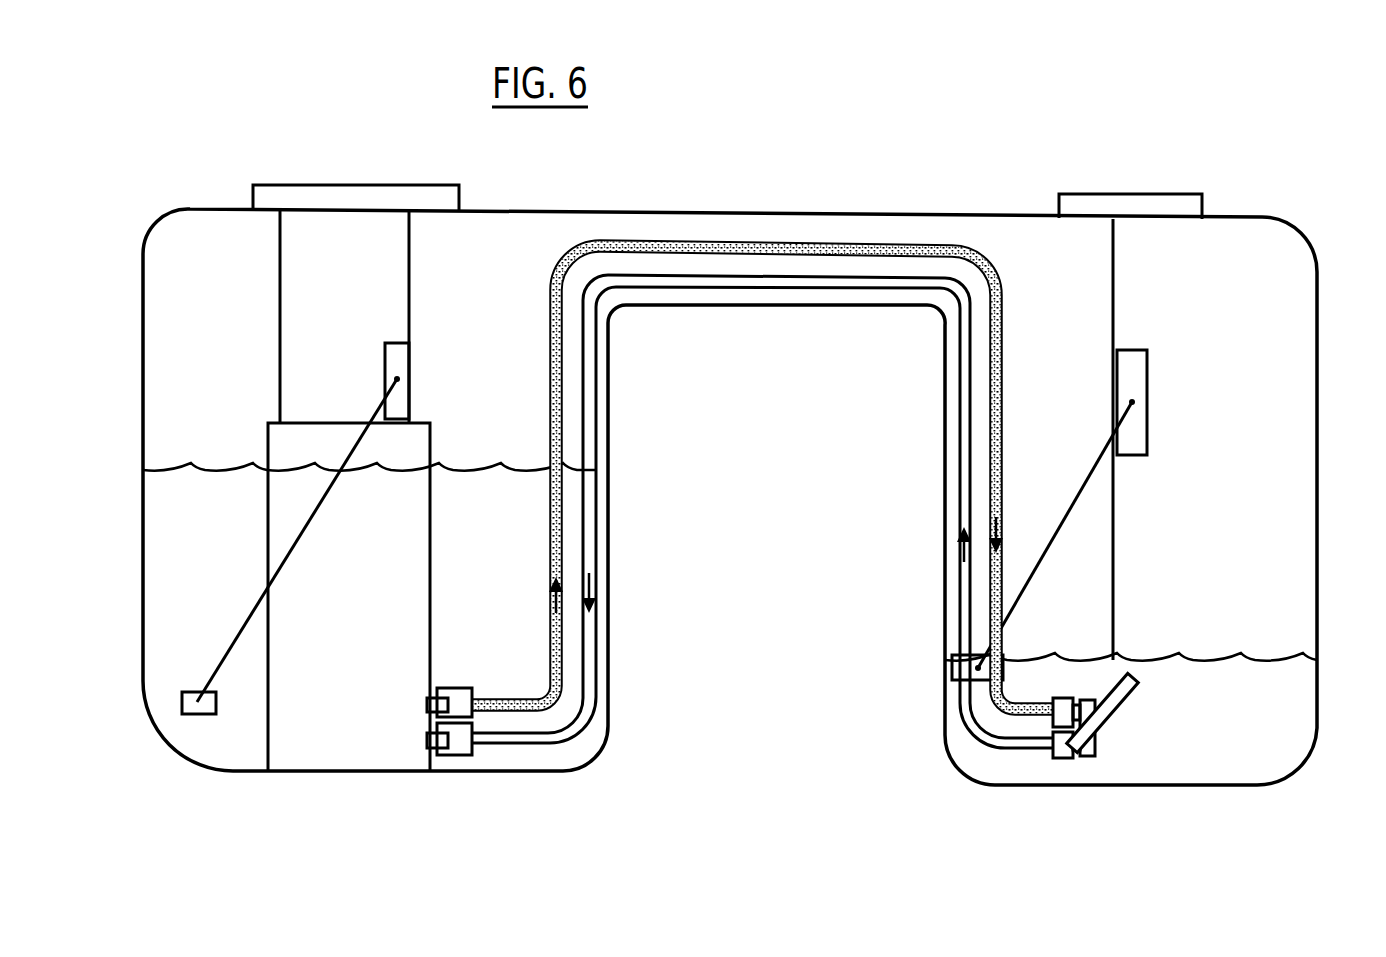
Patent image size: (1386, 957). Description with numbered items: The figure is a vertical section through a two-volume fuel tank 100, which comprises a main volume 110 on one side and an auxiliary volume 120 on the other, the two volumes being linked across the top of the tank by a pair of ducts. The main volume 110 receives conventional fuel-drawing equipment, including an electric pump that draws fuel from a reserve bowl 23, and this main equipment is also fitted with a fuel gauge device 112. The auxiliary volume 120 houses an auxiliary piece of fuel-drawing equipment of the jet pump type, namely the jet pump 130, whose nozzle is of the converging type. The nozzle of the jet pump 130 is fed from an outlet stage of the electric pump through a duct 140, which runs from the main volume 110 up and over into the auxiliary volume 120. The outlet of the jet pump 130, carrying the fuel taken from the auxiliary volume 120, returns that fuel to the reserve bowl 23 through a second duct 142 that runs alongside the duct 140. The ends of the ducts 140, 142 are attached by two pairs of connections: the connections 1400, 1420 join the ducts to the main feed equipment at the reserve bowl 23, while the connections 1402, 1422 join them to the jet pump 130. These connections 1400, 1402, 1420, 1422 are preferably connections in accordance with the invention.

The two-volume fuel tank 100 is at (180, 203).
The main volume 110 is at (173, 637).
The auxiliary volume 120 is at (1270, 560).
The fuel gauge device 112 is at (442, 368).
The reserve bowl 23 is at (288, 707).
The duct 140 is at (792, 246).
The second duct 142 is at (860, 283).
The connection 1400 is at (462, 695).
The connection 1420 is at (458, 760).
The connection 1402 is at (1065, 688).
The connection 1422 is at (1065, 762).
The jet pump 130 is at (1155, 712).